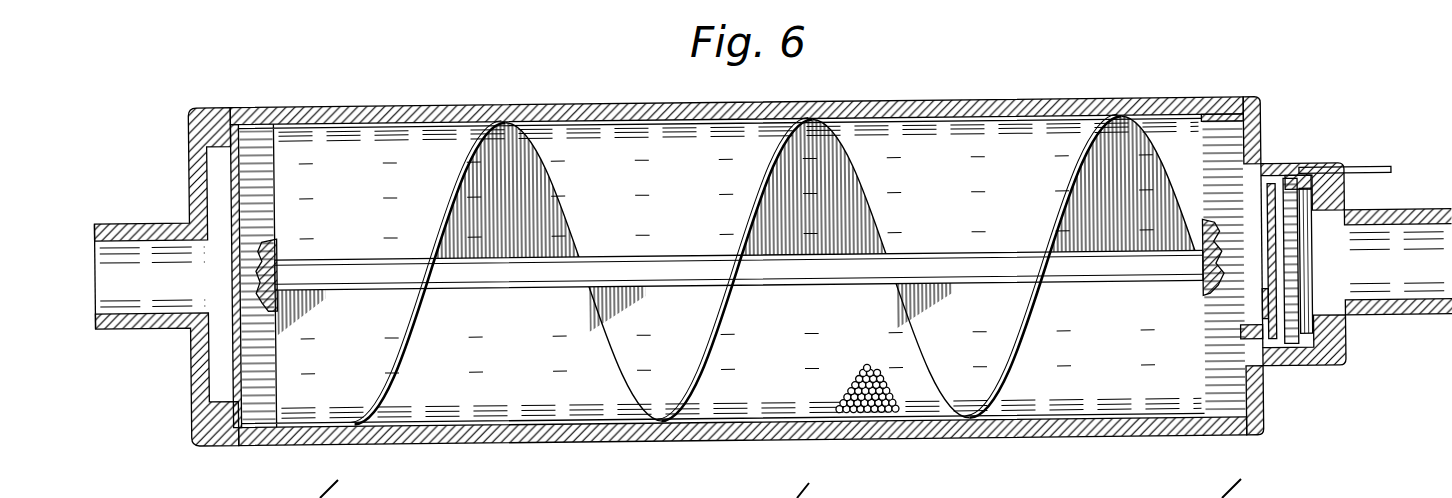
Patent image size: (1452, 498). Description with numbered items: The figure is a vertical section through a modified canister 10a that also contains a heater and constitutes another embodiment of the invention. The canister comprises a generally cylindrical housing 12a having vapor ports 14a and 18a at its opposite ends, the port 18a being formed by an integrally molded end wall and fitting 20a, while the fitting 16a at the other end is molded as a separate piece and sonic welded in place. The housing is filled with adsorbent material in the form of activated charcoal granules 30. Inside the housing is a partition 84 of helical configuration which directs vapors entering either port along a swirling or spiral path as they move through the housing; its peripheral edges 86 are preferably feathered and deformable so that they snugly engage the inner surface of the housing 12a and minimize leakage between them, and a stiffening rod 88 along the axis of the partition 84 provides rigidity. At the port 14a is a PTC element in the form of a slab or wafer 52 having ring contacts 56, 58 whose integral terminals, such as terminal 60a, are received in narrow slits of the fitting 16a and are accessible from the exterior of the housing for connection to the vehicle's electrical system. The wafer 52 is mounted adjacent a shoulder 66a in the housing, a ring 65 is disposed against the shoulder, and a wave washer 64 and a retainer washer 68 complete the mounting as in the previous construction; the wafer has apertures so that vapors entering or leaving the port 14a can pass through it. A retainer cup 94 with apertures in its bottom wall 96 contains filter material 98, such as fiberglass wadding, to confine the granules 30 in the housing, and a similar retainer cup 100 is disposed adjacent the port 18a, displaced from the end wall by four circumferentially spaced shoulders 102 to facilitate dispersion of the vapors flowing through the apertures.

The canister 10a is at (545, 96).
The housing 12a is at (965, 110).
The vapor port 14a is at (1309, 128).
The fitting 16a is at (1412, 329).
The vapor port 18a is at (172, 170).
The end wall and fitting 20a is at (130, 330).
The activated charcoal granules 30 is at (862, 373).
The PTC element wafer 52 is at (1289, 199).
The ring contact 56 is at (1275, 263).
The ring contact 58 is at (1308, 290).
The terminal 60a is at (1388, 180).
The wave washer 64 is at (1271, 302).
The ring 65 is at (1260, 323).
The shoulder 66a is at (1250, 353).
The retainer washer 68 is at (1313, 378).
The partition 84 is at (456, 240).
The peripheral edges 86 is at (424, 325).
The stiffening rod 88 is at (516, 276).
The retainer cup 94 is at (1228, 443).
The bottom wall 96 is at (1262, 134).
The filter material 98 is at (1218, 148).
The retainer cup 100 is at (262, 123).
The shoulders 102 is at (217, 127).